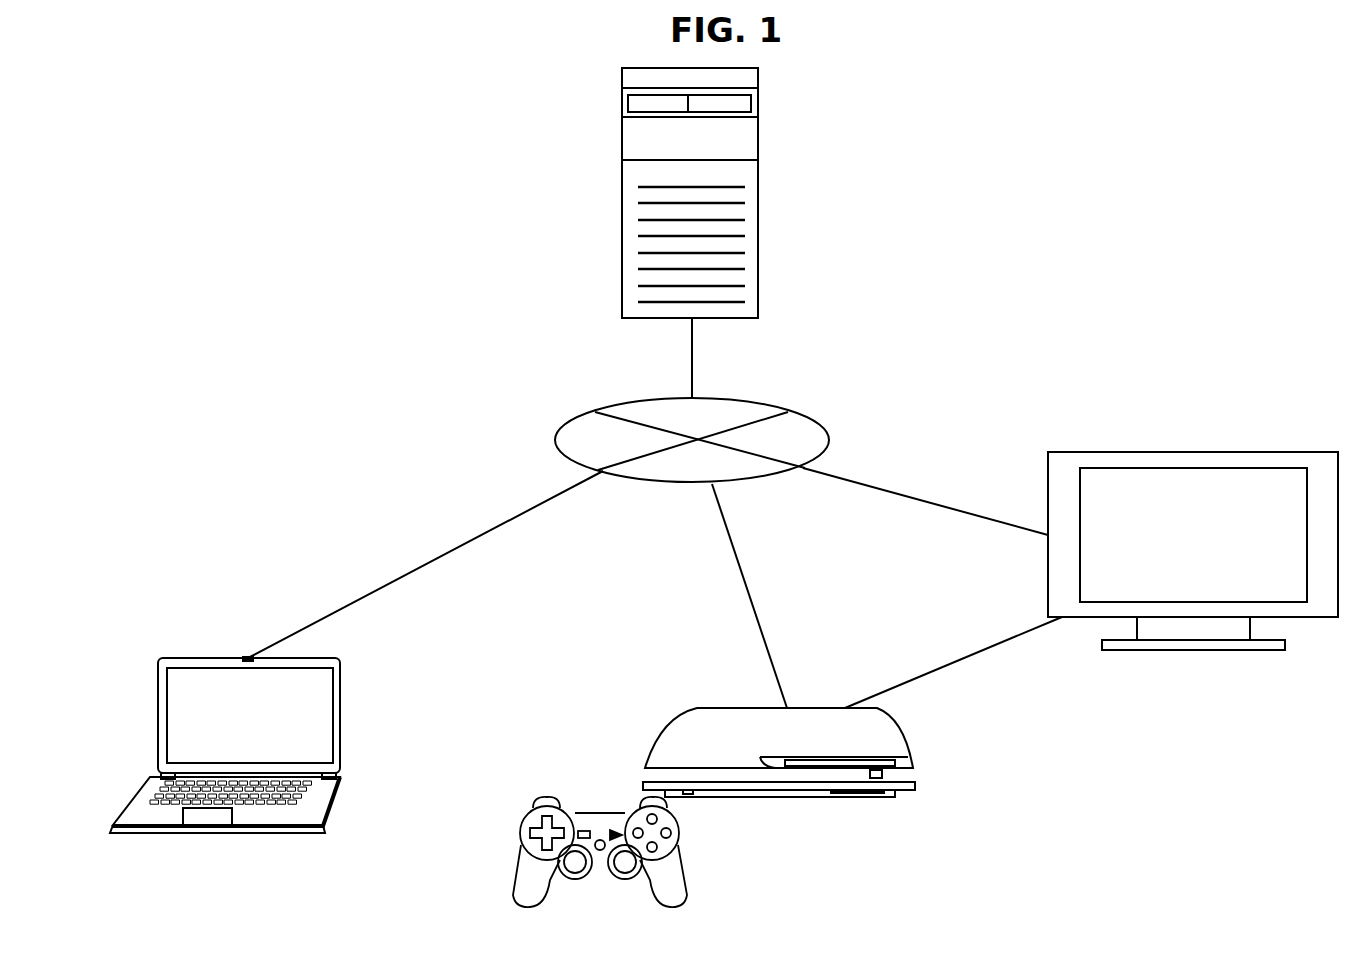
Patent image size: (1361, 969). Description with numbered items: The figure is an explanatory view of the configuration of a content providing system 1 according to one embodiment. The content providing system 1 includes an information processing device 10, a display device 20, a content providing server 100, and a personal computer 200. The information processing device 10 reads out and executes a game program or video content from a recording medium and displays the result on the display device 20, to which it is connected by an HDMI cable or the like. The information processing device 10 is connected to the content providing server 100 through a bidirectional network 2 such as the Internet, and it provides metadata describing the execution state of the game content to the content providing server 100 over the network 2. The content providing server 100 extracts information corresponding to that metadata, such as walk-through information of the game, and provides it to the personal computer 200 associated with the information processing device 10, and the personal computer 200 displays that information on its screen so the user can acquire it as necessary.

The content providing system 1 is at (298, 88).
The content providing server 100 is at (758, 130).
The network 2 is at (830, 425).
The display device 20 is at (1192, 452).
The personal computer 200 is at (340, 715).
The information processing device 10 is at (913, 725).